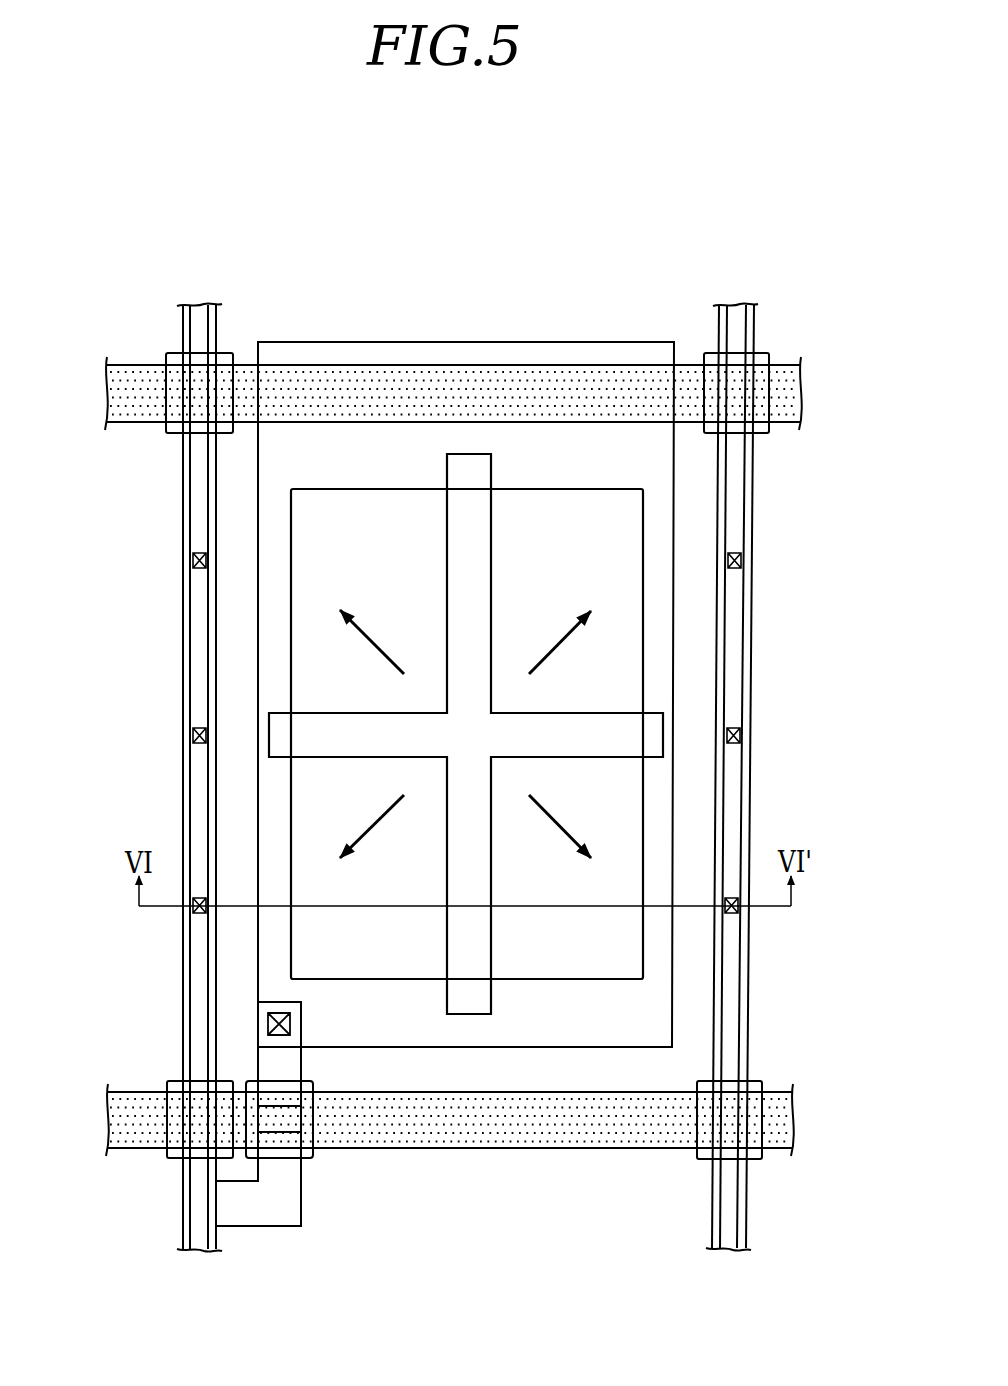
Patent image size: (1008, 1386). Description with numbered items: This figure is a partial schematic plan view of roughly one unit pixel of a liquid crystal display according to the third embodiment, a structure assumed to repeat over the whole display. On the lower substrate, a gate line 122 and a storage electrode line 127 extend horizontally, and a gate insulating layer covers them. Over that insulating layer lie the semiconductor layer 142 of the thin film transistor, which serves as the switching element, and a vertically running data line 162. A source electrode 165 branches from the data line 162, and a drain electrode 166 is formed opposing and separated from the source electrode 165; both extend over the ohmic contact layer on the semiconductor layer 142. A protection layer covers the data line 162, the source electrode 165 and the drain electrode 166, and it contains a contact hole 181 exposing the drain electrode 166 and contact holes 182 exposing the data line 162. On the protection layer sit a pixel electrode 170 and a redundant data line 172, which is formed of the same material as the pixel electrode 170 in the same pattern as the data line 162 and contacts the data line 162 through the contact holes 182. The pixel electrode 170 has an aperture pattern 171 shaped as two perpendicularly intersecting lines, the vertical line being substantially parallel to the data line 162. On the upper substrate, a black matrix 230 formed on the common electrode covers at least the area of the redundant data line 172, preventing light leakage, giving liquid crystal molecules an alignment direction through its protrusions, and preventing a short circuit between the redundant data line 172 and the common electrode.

The gate line 122 is at (465, 1150).
The storage electrode line 127 is at (477, 372).
The semiconductor layer 142 is at (312, 1155).
The data line 162 is at (183, 812).
The source electrode 165 is at (275, 1227).
The drain electrode 166 is at (258, 1036).
The pixel electrode 170 is at (672, 920).
The aperture pattern 171 is at (667, 748).
The redundant data line 172 is at (183, 668).
The contact hole 181 is at (259, 1012).
The contact holes 182 is at (189, 561).
The black matrix 230 is at (643, 535).